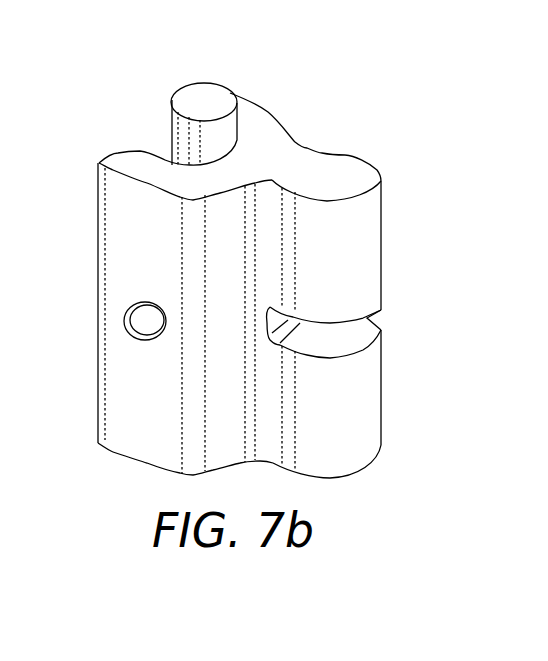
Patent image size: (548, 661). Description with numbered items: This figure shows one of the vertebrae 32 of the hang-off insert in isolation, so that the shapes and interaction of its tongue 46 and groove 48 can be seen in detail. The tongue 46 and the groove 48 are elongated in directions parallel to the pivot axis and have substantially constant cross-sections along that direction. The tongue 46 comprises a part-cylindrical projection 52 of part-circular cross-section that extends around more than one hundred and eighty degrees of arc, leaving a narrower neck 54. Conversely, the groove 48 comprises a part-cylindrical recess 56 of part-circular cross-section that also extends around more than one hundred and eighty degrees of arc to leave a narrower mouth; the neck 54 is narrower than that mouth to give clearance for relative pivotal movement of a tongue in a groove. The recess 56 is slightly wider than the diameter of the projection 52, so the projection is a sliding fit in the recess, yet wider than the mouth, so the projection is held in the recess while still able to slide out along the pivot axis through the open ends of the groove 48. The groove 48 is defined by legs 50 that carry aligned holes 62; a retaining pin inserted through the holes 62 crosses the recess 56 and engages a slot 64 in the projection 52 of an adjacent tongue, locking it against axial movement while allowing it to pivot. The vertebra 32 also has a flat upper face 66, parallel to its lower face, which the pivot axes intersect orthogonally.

The vertebra 32 is at (76, 178).
The tongue 46 is at (386, 436).
The groove 48 is at (153, 137).
The legs 50 is at (170, 106).
The part-cylindrical projection 52 is at (372, 244).
The neck 54 is at (274, 188).
The part-cylindrical recess 56 is at (219, 128).
The holes 62 is at (130, 318).
The slot 64 is at (378, 327).
The upper face 66 is at (265, 143).